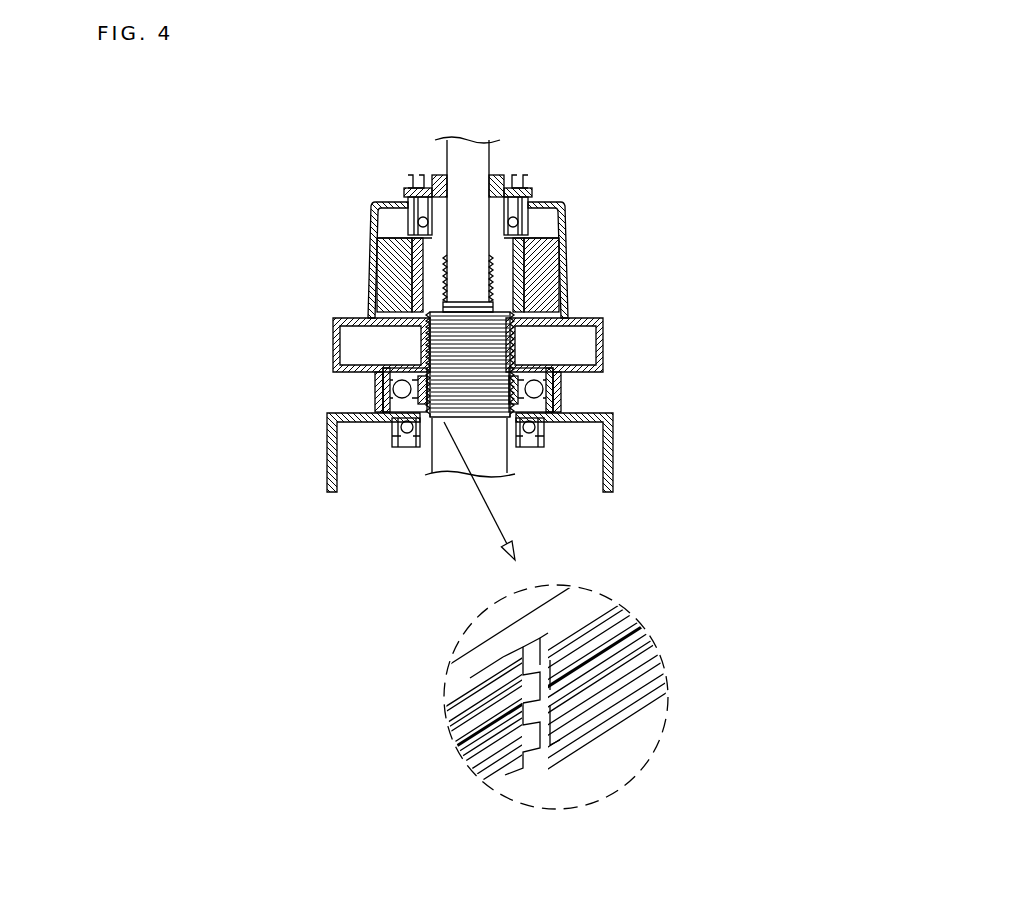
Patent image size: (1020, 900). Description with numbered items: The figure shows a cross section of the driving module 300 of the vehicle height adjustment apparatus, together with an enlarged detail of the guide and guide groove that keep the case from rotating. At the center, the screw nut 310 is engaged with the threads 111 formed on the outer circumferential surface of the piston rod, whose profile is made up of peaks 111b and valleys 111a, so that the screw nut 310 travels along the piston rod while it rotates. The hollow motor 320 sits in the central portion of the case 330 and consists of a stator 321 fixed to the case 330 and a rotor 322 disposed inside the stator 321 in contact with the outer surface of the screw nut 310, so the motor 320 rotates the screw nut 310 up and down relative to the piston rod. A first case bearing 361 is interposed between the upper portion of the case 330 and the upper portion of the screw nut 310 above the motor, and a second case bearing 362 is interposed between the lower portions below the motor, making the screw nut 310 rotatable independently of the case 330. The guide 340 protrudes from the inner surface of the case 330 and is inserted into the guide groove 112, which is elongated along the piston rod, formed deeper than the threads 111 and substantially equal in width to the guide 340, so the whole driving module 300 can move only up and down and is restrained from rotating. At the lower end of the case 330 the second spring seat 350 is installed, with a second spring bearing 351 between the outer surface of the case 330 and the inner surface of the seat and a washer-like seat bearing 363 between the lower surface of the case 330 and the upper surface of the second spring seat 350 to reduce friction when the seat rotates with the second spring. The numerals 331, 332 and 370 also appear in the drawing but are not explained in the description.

The driving module 300 is at (616, 318).
The screw nut 310 is at (566, 352).
The motor 320 is at (569, 246).
The stator 321 is at (548, 265).
The rotor 322 is at (532, 222).
The case 330 is at (359, 325).
The upper flange member 331 is at (378, 270).
The lower flange member 332 is at (333, 350).
The guide 340 is at (490, 417).
The second spring seat 350 is at (613, 458).
The second spring bearing 351 is at (405, 448).
The first case bearing 361 is at (412, 222).
The second case bearing 362 is at (553, 390).
The seat bearing 363 is at (383, 392).
The rotating shaft 370 is at (437, 178).
The threads 111 is at (405, 719).
The valleys 111a is at (482, 706).
The peaks 111b is at (455, 742).
The guide groove 112 is at (520, 640).